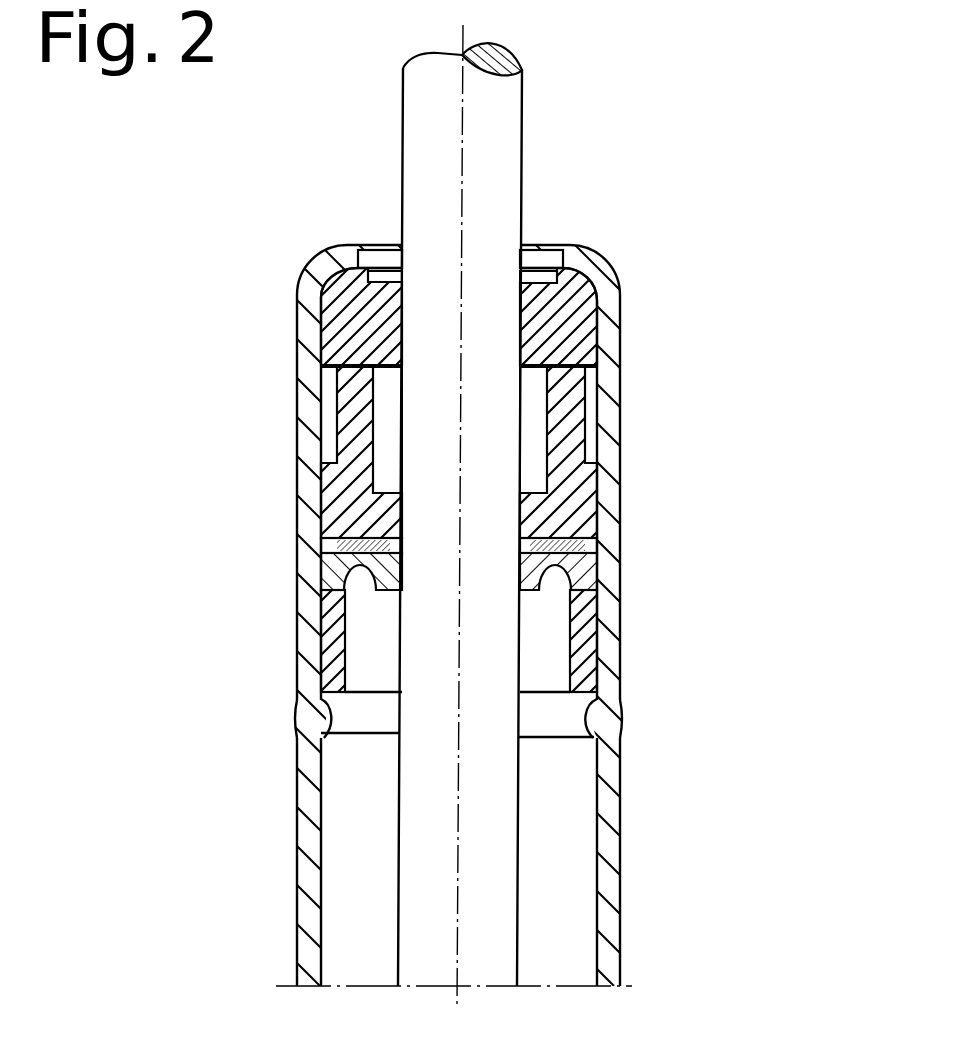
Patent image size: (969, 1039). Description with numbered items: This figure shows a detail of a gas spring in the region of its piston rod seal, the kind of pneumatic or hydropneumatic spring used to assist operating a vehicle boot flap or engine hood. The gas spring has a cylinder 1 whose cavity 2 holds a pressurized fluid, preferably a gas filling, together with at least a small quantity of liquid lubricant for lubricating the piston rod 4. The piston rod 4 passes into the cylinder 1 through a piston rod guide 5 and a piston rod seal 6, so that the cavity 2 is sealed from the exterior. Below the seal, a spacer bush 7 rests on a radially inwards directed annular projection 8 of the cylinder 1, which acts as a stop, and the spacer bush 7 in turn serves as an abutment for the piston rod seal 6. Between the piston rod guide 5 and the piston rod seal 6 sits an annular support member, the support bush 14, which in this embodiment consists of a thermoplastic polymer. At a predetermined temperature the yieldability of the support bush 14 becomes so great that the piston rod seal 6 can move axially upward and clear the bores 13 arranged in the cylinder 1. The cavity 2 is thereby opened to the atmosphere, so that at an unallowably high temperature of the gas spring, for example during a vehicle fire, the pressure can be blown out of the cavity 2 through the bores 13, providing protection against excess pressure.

The cylinder 1 is at (605, 803).
The cavity 2 is at (337, 795).
The piston rod 4 is at (493, 153).
The piston rod guide 5 is at (575, 322).
The piston rod seal 6 is at (597, 549).
The spacer bush 7 is at (583, 627).
The annular projection 8 is at (603, 718).
The bores 13 is at (321, 548).
The support bush 14 is at (357, 413).